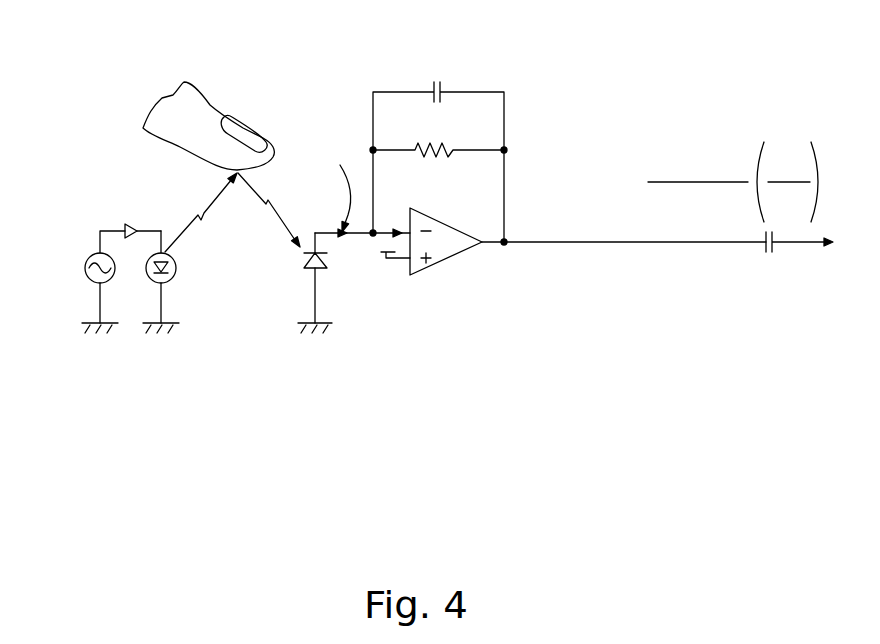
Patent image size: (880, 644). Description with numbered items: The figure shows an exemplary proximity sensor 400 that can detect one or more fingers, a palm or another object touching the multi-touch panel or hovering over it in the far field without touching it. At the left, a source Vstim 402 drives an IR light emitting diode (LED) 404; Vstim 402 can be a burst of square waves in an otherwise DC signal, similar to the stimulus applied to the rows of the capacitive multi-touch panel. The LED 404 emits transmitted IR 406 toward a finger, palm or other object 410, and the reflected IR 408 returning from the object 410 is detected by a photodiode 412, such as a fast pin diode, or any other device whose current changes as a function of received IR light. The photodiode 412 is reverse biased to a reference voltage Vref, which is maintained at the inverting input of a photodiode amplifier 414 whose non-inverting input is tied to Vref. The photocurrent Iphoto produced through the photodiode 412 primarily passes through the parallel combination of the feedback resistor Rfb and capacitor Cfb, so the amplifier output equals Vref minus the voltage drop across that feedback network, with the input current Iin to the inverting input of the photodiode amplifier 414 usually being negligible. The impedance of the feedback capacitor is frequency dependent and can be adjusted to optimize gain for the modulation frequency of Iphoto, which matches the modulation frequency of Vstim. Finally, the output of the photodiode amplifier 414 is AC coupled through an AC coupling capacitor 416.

The proximity sensor 400 is at (559, 120).
The source Vstim 402 is at (91, 277).
The IR light emitting diode (LED) 404 is at (179, 282).
The transmitted IR 406 is at (195, 212).
The reflected IR 408 is at (280, 209).
The object 410 is at (214, 112).
The photodiode 412 is at (307, 270).
The photodiode amplifier 414 is at (564, 273).
The AC coupling capacitor 416 is at (791, 259).